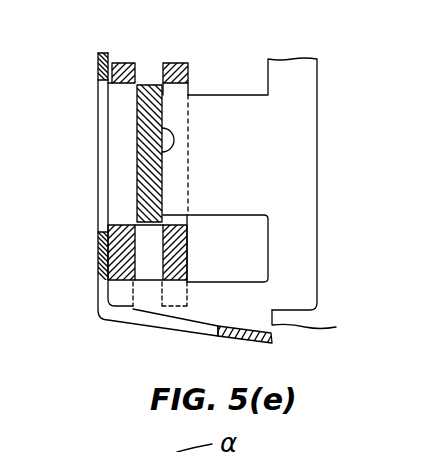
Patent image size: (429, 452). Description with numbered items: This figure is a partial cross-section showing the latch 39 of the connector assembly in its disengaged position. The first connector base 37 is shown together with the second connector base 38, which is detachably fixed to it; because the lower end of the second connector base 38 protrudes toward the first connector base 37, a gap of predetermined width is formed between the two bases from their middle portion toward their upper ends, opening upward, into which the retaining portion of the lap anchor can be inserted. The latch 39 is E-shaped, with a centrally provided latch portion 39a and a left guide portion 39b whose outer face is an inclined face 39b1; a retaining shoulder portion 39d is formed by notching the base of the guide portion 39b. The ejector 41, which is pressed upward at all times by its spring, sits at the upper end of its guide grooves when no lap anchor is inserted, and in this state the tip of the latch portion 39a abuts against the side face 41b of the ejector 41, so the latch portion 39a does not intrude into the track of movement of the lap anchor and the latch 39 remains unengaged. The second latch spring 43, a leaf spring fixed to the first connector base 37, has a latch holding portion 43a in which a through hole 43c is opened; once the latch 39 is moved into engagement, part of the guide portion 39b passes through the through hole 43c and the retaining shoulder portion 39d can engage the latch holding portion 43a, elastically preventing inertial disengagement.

The first connector base 37 is at (125, 63).
The second connector base 38 is at (180, 63).
The latch 39 is at (283, 180).
The latch portion 39a is at (219, 124).
The left guide portion 39b is at (148, 297).
The inclined face 39b1 is at (160, 312).
The retaining shoulder portion 39d is at (329, 329).
The ejector 41 is at (149, 85).
The side face 41b is at (157, 162).
The second latch spring 43 is at (98, 70).
The latch holding portion 43a is at (262, 338).
The through hole 43c is at (215, 328).